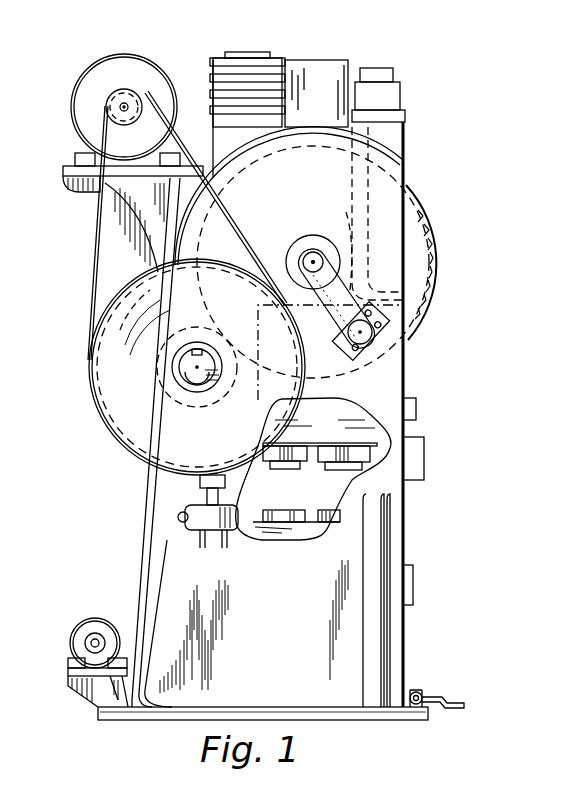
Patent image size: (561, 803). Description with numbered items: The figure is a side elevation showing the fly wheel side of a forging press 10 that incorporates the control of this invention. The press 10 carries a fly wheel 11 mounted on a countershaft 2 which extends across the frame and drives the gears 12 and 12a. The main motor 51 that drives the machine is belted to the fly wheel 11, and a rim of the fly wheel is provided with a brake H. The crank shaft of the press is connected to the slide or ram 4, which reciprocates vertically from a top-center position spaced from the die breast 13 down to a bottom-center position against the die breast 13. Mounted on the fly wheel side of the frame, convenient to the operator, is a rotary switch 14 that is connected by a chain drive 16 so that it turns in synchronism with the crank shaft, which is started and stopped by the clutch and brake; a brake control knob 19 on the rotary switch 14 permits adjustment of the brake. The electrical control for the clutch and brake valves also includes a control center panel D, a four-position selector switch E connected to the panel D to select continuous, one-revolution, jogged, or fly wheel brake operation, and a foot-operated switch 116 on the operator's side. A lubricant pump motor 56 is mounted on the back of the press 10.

The press 10 is at (410, 541).
The main motor 51 is at (128, 78).
The gear 12 is at (105, 324).
The fly wheel 11 is at (132, 408).
The countershaft 2 is at (195, 382).
The chain drive 16 is at (313, 262).
The gear 12a is at (432, 250).
The brake control knob 19 is at (398, 330).
The rotary switch 14 is at (380, 350).
The die breast 13 is at (313, 469).
The slide or ram 4 is at (315, 413).
The brake H is at (210, 532).
The lubricant pump motor 56 is at (96, 630).
The four-position selector switch E is at (416, 408).
The control center panel D is at (424, 461).
The foot switch 116 is at (426, 690).